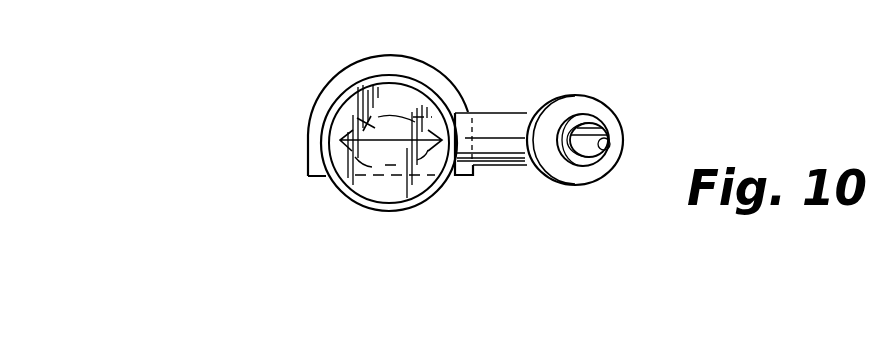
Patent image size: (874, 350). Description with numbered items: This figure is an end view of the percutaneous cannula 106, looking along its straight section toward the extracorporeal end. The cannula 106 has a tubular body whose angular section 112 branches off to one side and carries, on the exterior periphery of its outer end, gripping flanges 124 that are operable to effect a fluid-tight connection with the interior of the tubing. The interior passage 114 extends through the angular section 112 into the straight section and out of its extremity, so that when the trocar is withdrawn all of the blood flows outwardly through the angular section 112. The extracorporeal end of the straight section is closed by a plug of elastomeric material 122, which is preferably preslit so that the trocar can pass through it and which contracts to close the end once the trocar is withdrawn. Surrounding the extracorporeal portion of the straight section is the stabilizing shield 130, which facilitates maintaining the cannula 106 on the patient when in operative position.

The percutaneous cannula 106 is at (567, 85).
The angular section 112 is at (483, 112).
The interior passage 114 is at (610, 145).
The elastomeric plug 122 is at (377, 125).
The gripping flanges 124 is at (590, 96).
The stabilizing shield 130 is at (428, 20).